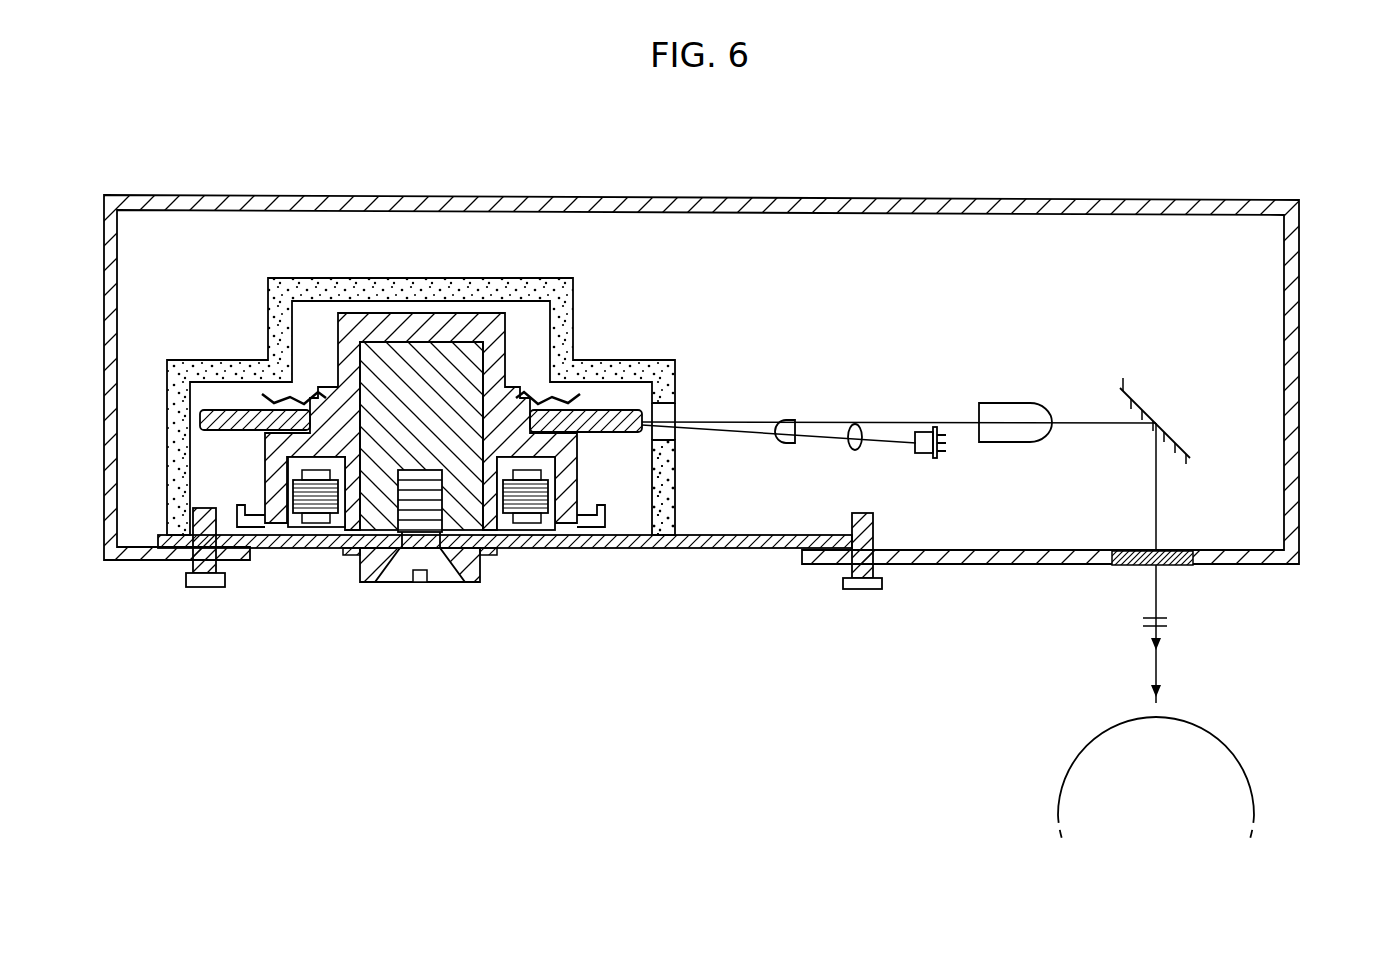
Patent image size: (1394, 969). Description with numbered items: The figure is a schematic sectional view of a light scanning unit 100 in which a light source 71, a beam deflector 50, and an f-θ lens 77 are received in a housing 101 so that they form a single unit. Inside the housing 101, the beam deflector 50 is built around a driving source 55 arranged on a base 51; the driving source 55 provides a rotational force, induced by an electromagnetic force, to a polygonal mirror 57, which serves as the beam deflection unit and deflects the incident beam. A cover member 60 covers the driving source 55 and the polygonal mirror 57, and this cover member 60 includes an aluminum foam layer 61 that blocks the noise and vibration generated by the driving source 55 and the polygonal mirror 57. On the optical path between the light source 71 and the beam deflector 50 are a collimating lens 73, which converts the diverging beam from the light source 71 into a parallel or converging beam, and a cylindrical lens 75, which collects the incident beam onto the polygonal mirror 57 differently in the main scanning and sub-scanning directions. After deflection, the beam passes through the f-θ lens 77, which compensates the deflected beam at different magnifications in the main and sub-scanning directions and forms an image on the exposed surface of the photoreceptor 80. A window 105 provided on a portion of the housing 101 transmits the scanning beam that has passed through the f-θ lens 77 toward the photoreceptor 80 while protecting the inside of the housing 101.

The light scanning unit 100 is at (737, 334).
The housing 101 is at (1291, 405).
The beam deflector 50 is at (455, 442).
The base 51 is at (748, 550).
The driving source 55 is at (596, 487).
The polygonal mirror 57 is at (636, 410).
The cover member 60 is at (663, 488).
The aluminum foam layer 61 is at (657, 509).
The light source 71 is at (921, 453).
The collimating lens 73 is at (853, 450).
The cylindrical lens 75 is at (787, 443).
The f-θ lens 77 is at (1000, 442).
The photoreceptor 80 is at (1214, 720).
The window 105 is at (1178, 567).